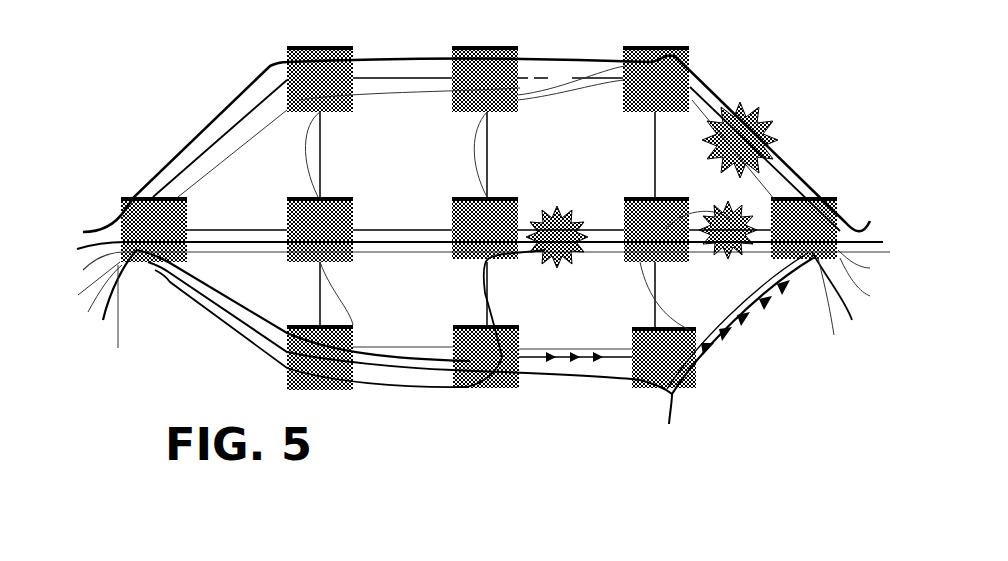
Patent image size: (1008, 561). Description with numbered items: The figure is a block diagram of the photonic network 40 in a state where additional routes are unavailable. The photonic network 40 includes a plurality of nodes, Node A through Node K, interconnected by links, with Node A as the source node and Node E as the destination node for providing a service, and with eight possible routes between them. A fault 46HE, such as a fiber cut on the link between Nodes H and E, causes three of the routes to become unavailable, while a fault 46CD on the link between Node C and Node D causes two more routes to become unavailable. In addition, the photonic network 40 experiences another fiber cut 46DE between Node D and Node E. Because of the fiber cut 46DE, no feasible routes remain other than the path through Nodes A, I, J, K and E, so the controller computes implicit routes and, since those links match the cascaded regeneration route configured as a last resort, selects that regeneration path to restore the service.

The photonic network 40 is at (131, 99).
The fault 46HE is at (772, 128).
The fault 46CD is at (547, 262).
The fiber cut 46DE is at (742, 258).